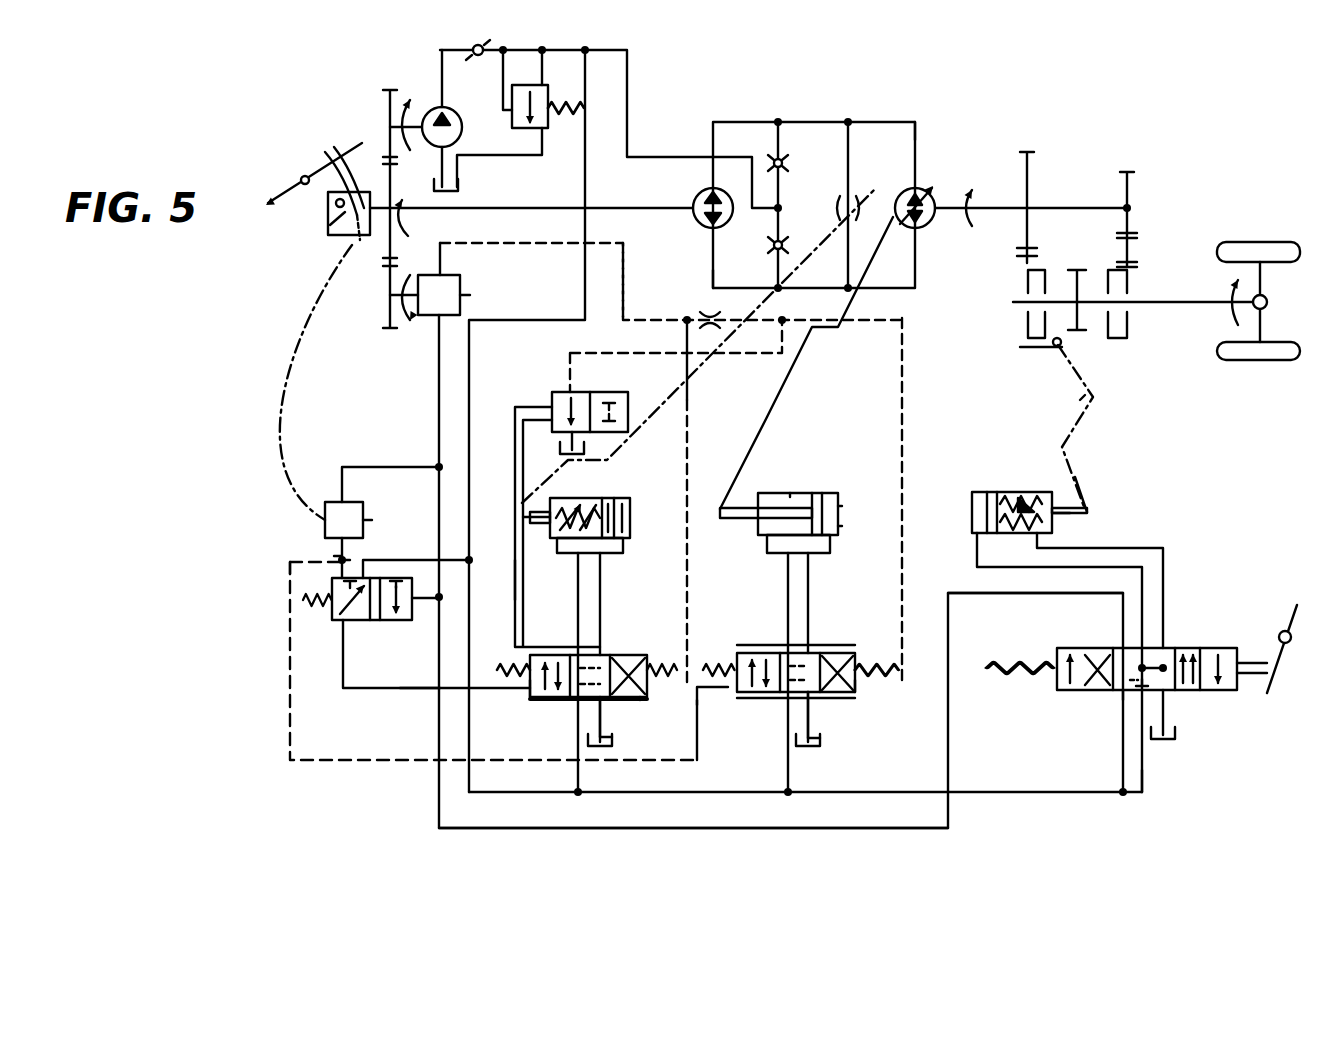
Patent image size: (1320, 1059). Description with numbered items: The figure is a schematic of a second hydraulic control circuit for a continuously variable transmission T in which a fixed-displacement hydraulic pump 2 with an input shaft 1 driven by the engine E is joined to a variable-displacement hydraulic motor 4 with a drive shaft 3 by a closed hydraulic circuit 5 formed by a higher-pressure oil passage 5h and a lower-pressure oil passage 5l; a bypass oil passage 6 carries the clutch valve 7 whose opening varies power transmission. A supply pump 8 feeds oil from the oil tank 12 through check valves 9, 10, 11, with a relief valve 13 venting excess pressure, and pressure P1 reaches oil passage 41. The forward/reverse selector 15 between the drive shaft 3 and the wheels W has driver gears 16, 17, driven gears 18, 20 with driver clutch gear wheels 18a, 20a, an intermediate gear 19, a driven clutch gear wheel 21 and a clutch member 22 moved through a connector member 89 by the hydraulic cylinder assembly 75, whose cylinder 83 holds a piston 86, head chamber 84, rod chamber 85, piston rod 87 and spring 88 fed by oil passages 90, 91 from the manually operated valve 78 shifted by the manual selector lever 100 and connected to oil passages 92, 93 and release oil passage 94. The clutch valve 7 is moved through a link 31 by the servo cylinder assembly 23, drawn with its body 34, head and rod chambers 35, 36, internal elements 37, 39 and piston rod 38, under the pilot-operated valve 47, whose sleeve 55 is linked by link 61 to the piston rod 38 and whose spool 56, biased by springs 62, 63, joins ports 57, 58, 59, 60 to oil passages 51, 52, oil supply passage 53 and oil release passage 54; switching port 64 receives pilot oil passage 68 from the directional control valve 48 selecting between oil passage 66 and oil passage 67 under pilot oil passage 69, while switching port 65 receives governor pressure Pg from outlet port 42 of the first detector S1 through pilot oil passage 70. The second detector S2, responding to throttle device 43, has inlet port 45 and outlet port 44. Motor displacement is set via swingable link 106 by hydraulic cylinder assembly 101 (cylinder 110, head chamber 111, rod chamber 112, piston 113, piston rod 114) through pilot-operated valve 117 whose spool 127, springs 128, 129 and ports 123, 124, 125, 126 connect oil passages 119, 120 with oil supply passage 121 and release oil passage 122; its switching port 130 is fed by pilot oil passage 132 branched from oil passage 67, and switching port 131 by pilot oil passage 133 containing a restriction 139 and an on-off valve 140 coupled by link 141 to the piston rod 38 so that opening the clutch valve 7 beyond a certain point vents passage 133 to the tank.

The input shaft 1 is at (550, 210).
The hydraulic pump 2 is at (692, 196).
The drive shaft 3 is at (1006, 200).
The hydraulic motor 4 is at (902, 184).
The closed hydraulic circuit 5 is at (915, 162).
The higher-pressure oil passage 5h is at (754, 278).
The lower-pressure oil passage 5l is at (743, 124).
The bypass oil passage 6 is at (850, 162).
The clutch valve 7 is at (832, 196).
The supply pump 8 is at (454, 112).
The check valve 9 is at (474, 48).
The check valve 10 is at (768, 242).
The check valve 11 is at (786, 162).
The oil tank 12 is at (470, 186).
The relief valve 13 is at (508, 132).
The forward/reverse selector 15 is at (1093, 144).
The first driver gear 16 is at (1030, 174).
The second driver gear 17 is at (1128, 172).
The first driven gear 18 is at (1020, 278).
The driver clutch gear wheel 18a is at (1040, 260).
The intermediate gear 19 is at (1133, 246).
The second driven gear 20 is at (1130, 324).
The driver clutch gear wheel 20a is at (1130, 280).
The driven clutch gear wheel 21 is at (1081, 268).
The clutch member 22 is at (1078, 346).
The servo cylinder assembly 23 is at (612, 483).
The link 31 is at (702, 372).
The valve body 34 is at (626, 545).
The head chamber 35 is at (631, 516).
The rod chamber 36 is at (598, 504).
The valve passage 37 is at (620, 502).
The piston rod 38 is at (520, 532).
The spring 39 is at (584, 500).
The oil passage 41 is at (1016, 594).
The outlet port 42 is at (454, 278).
The device for opening and closing the throttle valve 43 is at (332, 136).
The outlet port 44 is at (334, 556).
The inlet port 45 is at (348, 504).
The pilot-operated valve 47 is at (602, 658).
The directional control valve 48 is at (322, 636).
The oil passage 51 is at (602, 570).
The oil passage 52 is at (576, 570).
The oil supply passage 53 is at (576, 778).
The oil release passage 54 is at (608, 734).
The sleeve 55 is at (530, 712).
The spool 56 is at (648, 652).
The port 57 is at (609, 654).
The port 58 is at (568, 648).
The port 59 is at (570, 710).
The port 60 is at (604, 702).
The link 61 is at (514, 598).
The spring 62 is at (504, 670).
The spring 63 is at (656, 680).
The switching port 64 is at (522, 700).
The switching port 65 is at (652, 702).
The oil passage 66 is at (422, 560).
The oil passage 67 is at (350, 557).
The pilot oil passage 68 is at (394, 682).
The pilot oil passage 69 is at (418, 618).
The pilot oil passage 70 is at (554, 244).
The hydraulic cylinder assembly 75 is at (987, 492).
The manually operated valve 78 is at (1216, 632).
The cylinder 83 is at (1068, 484).
The head chamber 84 is at (972, 508).
The rod chamber 85 is at (1036, 492).
The piston 86 is at (988, 490).
The piston rod 87 is at (1084, 514).
The spring 88 is at (1014, 490).
The connector member 89 is at (1080, 400).
The oil passage 90 is at (974, 552).
The oil passage 91 is at (1038, 544).
The oil passage 92 is at (1120, 706).
The oil passage 93 is at (1142, 774).
The release oil passage 94 is at (1166, 710).
The manual selector lever 100 is at (1294, 628).
The hydraulic cylinder assembly 101 is at (826, 477).
The swingable link 106 is at (802, 368).
The cylinder 110 is at (838, 506).
The head chamber 111 is at (839, 526).
The rod chamber 112 is at (794, 492).
The piston 113 is at (818, 492).
The piston rod 114 is at (740, 522).
The pilot-operated valve 117 is at (820, 655).
The oil passage 119 is at (812, 570).
The oil passage 120 is at (784, 570).
The oil supply passage 121 is at (784, 748).
The release oil passage 122 is at (824, 738).
The port 123 is at (824, 646).
The port 124 is at (778, 642).
The port 125 is at (786, 704).
The port 126 is at (818, 702).
The spool 127 is at (864, 656).
The spring 128 is at (710, 664).
The spring 129 is at (896, 668).
The switching port 130 is at (720, 714).
The switching port 131 is at (858, 680).
The pilot oil passage 132 is at (288, 724).
The pilot oil passage 133 is at (906, 380).
The restriction 139 is at (704, 310).
The on-off valve 140 is at (618, 390).
The link 141 is at (514, 464).
The engine E is at (328, 238).
The continuously variable transmission T is at (846, 102).
The wheels W is at (1276, 232).
The hydraulic governor pressure Pg is at (628, 276).
The discharged hydraulic pressure P1 is at (312, 570).
The first detector S1 is at (479, 297).
The second detector S2 is at (383, 519).